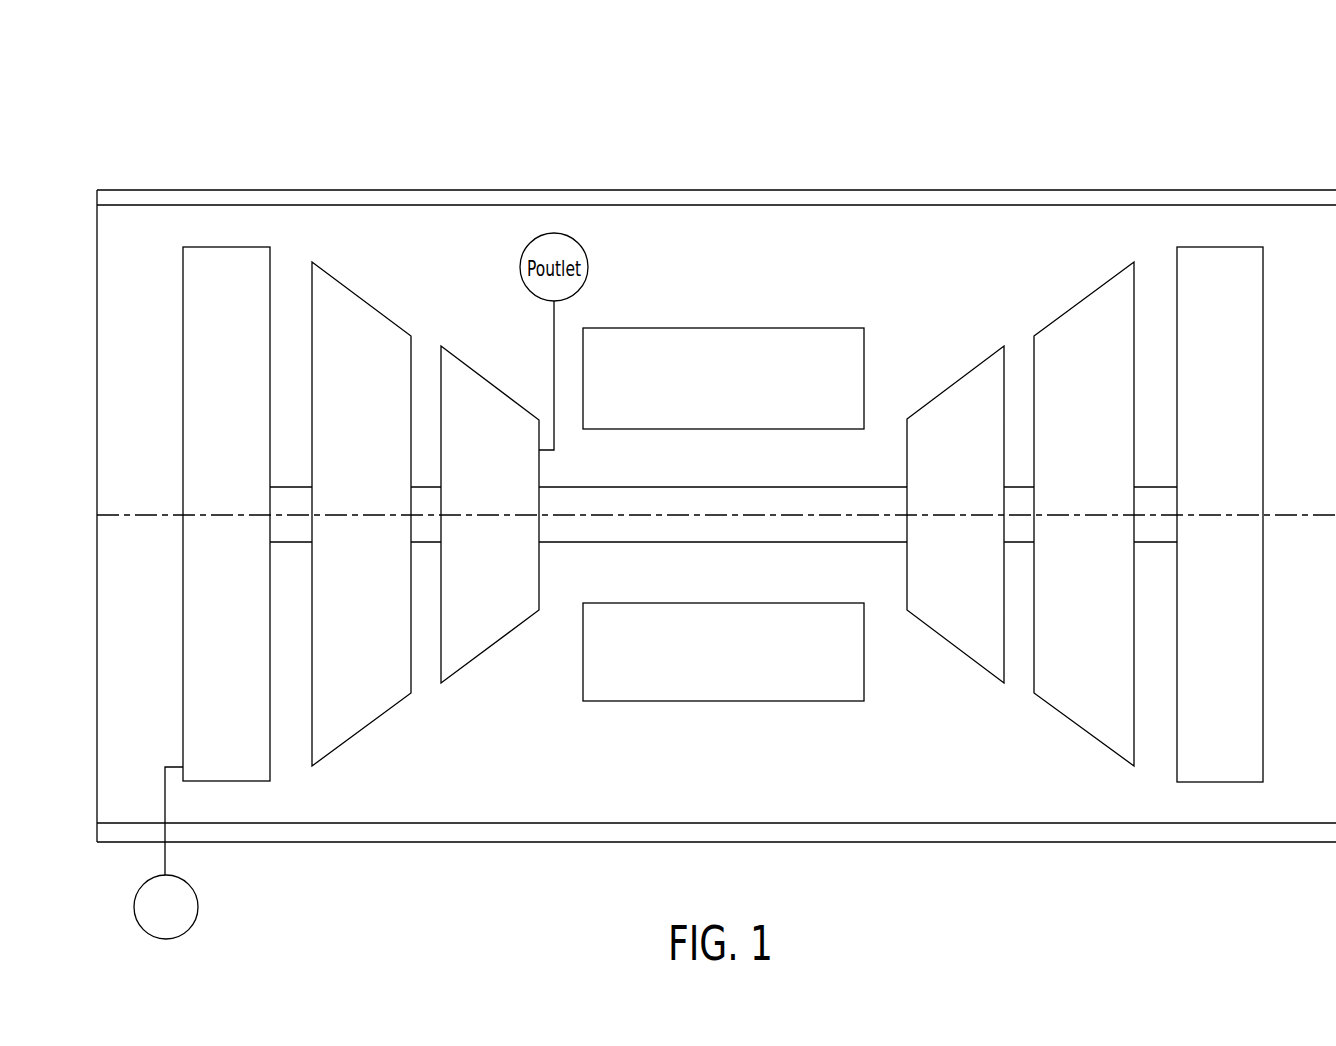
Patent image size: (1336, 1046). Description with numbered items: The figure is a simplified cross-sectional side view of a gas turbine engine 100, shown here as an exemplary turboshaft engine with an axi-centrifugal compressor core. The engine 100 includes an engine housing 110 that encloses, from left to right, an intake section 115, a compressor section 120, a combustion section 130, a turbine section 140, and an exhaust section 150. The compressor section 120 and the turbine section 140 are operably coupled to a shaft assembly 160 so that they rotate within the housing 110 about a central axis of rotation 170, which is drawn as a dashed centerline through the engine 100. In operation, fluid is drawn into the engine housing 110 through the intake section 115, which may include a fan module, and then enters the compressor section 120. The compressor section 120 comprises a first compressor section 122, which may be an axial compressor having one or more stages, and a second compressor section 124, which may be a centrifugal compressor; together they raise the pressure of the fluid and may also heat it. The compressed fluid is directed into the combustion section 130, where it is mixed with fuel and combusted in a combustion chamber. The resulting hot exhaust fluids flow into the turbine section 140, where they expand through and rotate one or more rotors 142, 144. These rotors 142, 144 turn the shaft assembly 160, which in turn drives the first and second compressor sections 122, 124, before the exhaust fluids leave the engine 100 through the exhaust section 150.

The gas turbine engine 100 is at (232, 113).
The engine housing 110 is at (168, 190).
The intake section 115 is at (183, 633).
The compressor section 120 is at (438, 514).
The first compressor section 122 is at (372, 730).
The second compressor section 124 is at (492, 645).
The combustion section 130 is at (823, 308).
The turbine section 140 is at (1010, 488).
The rotor 142 is at (955, 650).
The rotor 144 is at (1081, 731).
The exhaust section 150 is at (1225, 247).
The shaft assembly 160 is at (868, 470).
The axis of rotation 170 is at (117, 506).